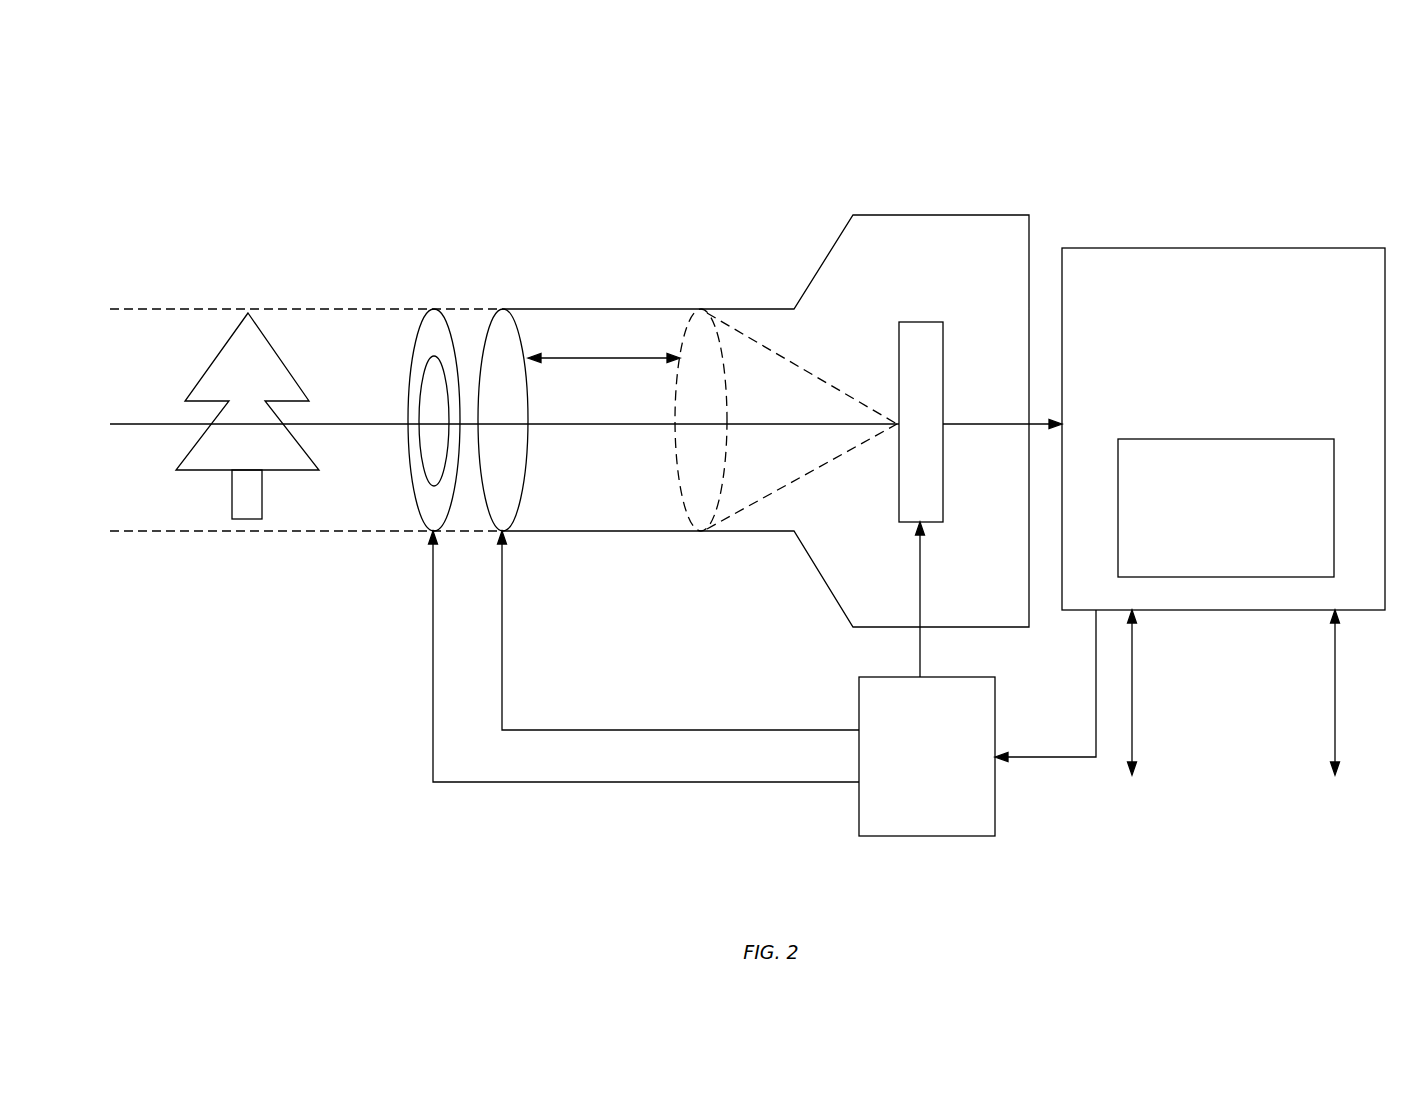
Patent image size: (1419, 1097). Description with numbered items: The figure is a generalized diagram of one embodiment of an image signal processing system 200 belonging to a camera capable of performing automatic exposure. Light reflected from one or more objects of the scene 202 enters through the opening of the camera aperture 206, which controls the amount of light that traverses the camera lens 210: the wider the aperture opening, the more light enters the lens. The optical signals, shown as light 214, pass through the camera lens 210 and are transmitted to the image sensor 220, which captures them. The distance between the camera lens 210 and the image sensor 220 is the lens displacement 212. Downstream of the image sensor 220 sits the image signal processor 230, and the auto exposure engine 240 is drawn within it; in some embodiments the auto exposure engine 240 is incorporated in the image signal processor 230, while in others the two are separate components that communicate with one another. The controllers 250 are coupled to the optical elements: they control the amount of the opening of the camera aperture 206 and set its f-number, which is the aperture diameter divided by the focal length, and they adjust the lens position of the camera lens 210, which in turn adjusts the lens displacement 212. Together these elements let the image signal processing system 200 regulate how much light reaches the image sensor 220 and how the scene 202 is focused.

The image signal processing system 200 is at (1282, 136).
The scene 202 is at (210, 365).
The camera aperture 206 is at (425, 372).
The camera lens 210 is at (489, 333).
The lens displacement 212 is at (627, 353).
The light 214 is at (770, 347).
The image sensor 220 is at (909, 322).
The image signal processor 230 is at (1223, 429).
The auto exposure (AE) engine 240 is at (1226, 508).
The controllers 250 is at (927, 756).